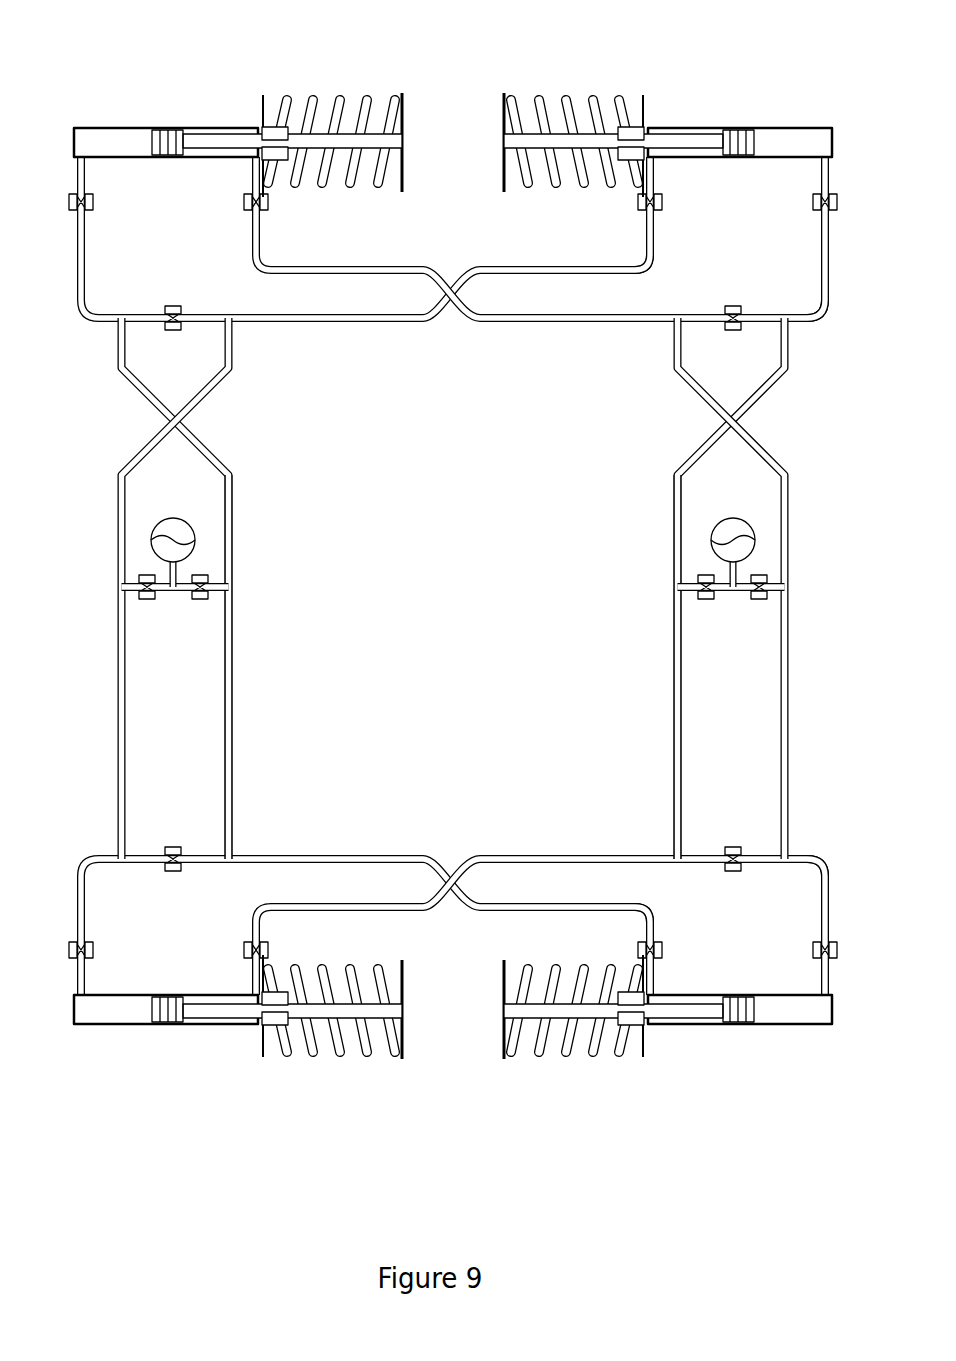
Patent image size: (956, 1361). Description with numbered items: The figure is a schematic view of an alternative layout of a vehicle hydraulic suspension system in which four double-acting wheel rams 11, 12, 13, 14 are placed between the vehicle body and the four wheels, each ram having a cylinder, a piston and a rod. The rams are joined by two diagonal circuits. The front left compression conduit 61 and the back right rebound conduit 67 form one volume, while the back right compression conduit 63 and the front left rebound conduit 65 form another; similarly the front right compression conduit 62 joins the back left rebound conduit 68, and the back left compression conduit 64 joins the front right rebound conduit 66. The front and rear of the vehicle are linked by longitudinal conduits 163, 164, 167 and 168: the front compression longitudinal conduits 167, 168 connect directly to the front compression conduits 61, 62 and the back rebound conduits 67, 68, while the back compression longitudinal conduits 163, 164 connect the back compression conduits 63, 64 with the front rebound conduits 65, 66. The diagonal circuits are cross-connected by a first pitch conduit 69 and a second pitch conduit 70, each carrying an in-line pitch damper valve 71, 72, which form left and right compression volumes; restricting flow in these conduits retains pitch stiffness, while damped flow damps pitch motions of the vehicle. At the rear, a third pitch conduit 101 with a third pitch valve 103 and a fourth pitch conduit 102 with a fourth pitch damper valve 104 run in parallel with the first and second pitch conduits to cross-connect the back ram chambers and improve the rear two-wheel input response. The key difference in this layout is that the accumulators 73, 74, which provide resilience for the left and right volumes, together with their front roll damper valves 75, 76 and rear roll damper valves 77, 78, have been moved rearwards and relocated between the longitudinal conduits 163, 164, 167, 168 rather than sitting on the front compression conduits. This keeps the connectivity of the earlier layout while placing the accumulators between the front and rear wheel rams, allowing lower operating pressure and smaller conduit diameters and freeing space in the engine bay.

The wheel ram 11 is at (167, 92).
The wheel ram 12 is at (741, 92).
The wheel ram 13 is at (725, 1077).
The wheel ram 14 is at (172, 1077).
The front left compression conduit 61 is at (87, 247).
The front right compression conduit 62 is at (819, 247).
The back right compression conduit 63 is at (818, 912).
The back left compression conduit 64 is at (88, 914).
The front left rebound conduit 65 is at (248, 248).
The front right rebound conduit 66 is at (657, 248).
The back right rebound conduit 67 is at (652, 912).
The back left rebound conduit 68 is at (257, 912).
The first pitch conduit 69 is at (151, 323).
The second pitch conduit 70 is at (763, 323).
The pitch damper valve 71 is at (177, 332).
The pitch damper valve 72 is at (729, 332).
The accumulator 73 is at (178, 520).
The accumulator 74 is at (728, 520).
The front roll damper valve 75 is at (201, 600).
The front roll damper valve 76 is at (706, 601).
The rear roll damper valve 77 is at (761, 601).
The rear roll damper valve 78 is at (148, 600).
The third pitch conduit 101 is at (154, 852).
The fourth pitch conduit 102 is at (750, 852).
The third pitch valve 103 is at (176, 852).
The fourth pitch damper valve 104 is at (730, 852).
The back compression longitudinal conduit 163 is at (783, 728).
The back compression longitudinal conduit 164 is at (125, 728).
The front compression longitudinal conduit 167 is at (230, 728).
The front compression longitudinal conduit 168 is at (677, 728).